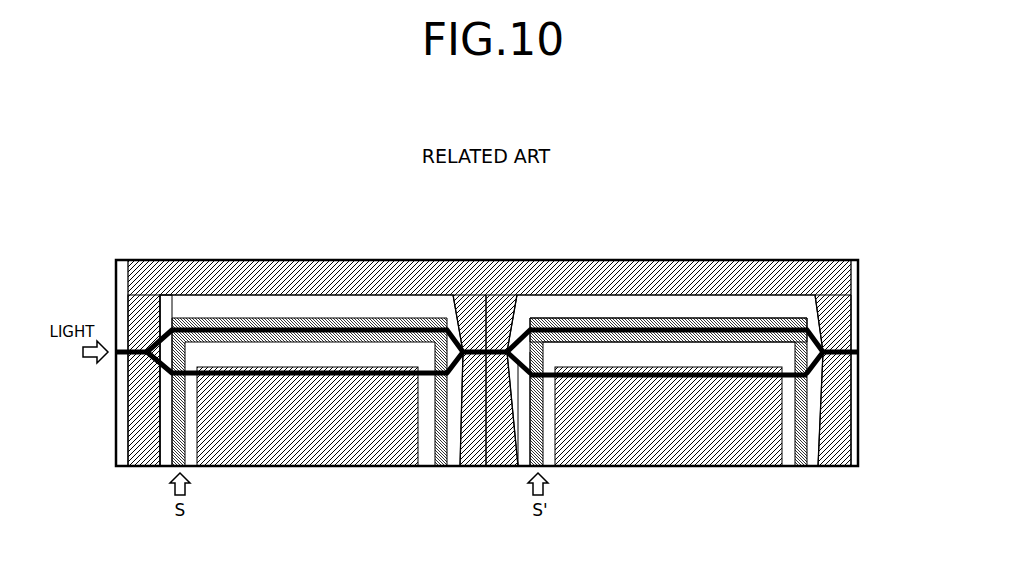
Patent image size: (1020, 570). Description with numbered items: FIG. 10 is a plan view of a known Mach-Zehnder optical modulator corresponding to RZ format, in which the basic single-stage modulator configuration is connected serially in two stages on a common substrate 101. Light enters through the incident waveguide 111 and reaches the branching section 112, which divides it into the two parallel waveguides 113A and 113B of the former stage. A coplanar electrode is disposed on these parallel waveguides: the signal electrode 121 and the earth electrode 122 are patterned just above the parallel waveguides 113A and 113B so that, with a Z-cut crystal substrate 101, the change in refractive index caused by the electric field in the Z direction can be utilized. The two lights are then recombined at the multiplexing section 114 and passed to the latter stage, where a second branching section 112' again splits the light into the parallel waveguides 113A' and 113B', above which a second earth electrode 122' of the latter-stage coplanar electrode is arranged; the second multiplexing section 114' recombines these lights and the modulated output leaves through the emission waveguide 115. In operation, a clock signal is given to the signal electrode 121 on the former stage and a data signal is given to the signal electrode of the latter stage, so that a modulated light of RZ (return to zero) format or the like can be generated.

The substrate 101 is at (859, 300).
The incident waveguide 111 is at (123, 350).
The branching section 112 is at (136, 348).
The branching section 112' is at (522, 348).
The parallel waveguide 113A is at (309, 438).
The parallel waveguide 113A' is at (668, 439).
The parallel waveguide 113B is at (489, 348).
The parallel waveguide 113B' is at (668, 286).
The multiplexing section 114 is at (458, 348).
The multiplexing section 114' is at (841, 348).
The emission waveguide 115 is at (859, 356).
The signal electrode 121 is at (161, 467).
The earth electrode 122 is at (343, 449).
The earth electrode 122' is at (677, 449).